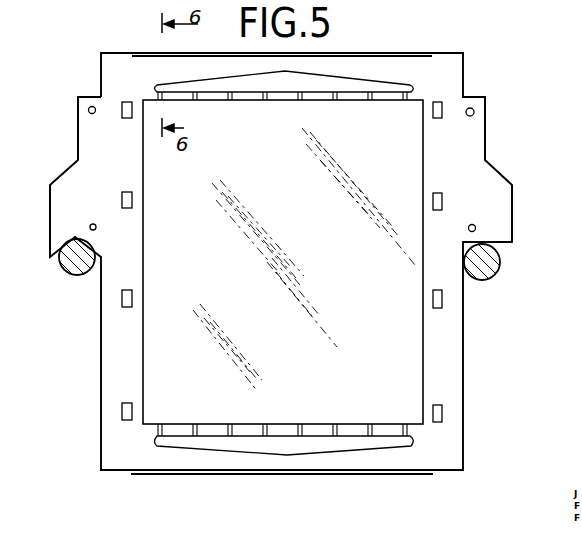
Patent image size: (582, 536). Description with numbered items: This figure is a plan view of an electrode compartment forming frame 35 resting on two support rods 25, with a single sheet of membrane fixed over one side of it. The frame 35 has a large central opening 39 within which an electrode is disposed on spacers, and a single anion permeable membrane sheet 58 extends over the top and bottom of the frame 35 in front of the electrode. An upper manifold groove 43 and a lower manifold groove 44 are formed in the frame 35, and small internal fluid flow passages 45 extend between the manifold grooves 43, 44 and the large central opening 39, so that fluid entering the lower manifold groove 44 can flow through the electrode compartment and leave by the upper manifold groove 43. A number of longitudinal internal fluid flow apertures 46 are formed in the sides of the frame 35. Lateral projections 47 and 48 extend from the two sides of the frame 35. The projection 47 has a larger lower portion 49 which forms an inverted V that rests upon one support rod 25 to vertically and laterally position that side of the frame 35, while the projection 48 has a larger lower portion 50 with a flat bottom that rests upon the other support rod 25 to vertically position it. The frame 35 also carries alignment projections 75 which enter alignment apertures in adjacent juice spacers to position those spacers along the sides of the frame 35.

The support rod 25 is at (64, 275).
The electrode compartment forming frame 35 is at (101, 438).
The large central opening 39 is at (418, 264).
The upper manifold groove 43 is at (250, 89).
The lower manifold groove 44 is at (279, 440).
The internal fluid flow passages 45 is at (334, 102).
The longitudinal internal fluid flow apertures 46 is at (122, 200).
The lateral projection 47 is at (78, 140).
The lateral projection 48 is at (485, 128).
The larger lower portion 49 is at (50, 216).
The larger lower portion 50 is at (512, 207).
The anion permeable membrane sheet 58 is at (292, 226).
The alignment projections 75 is at (88, 110).